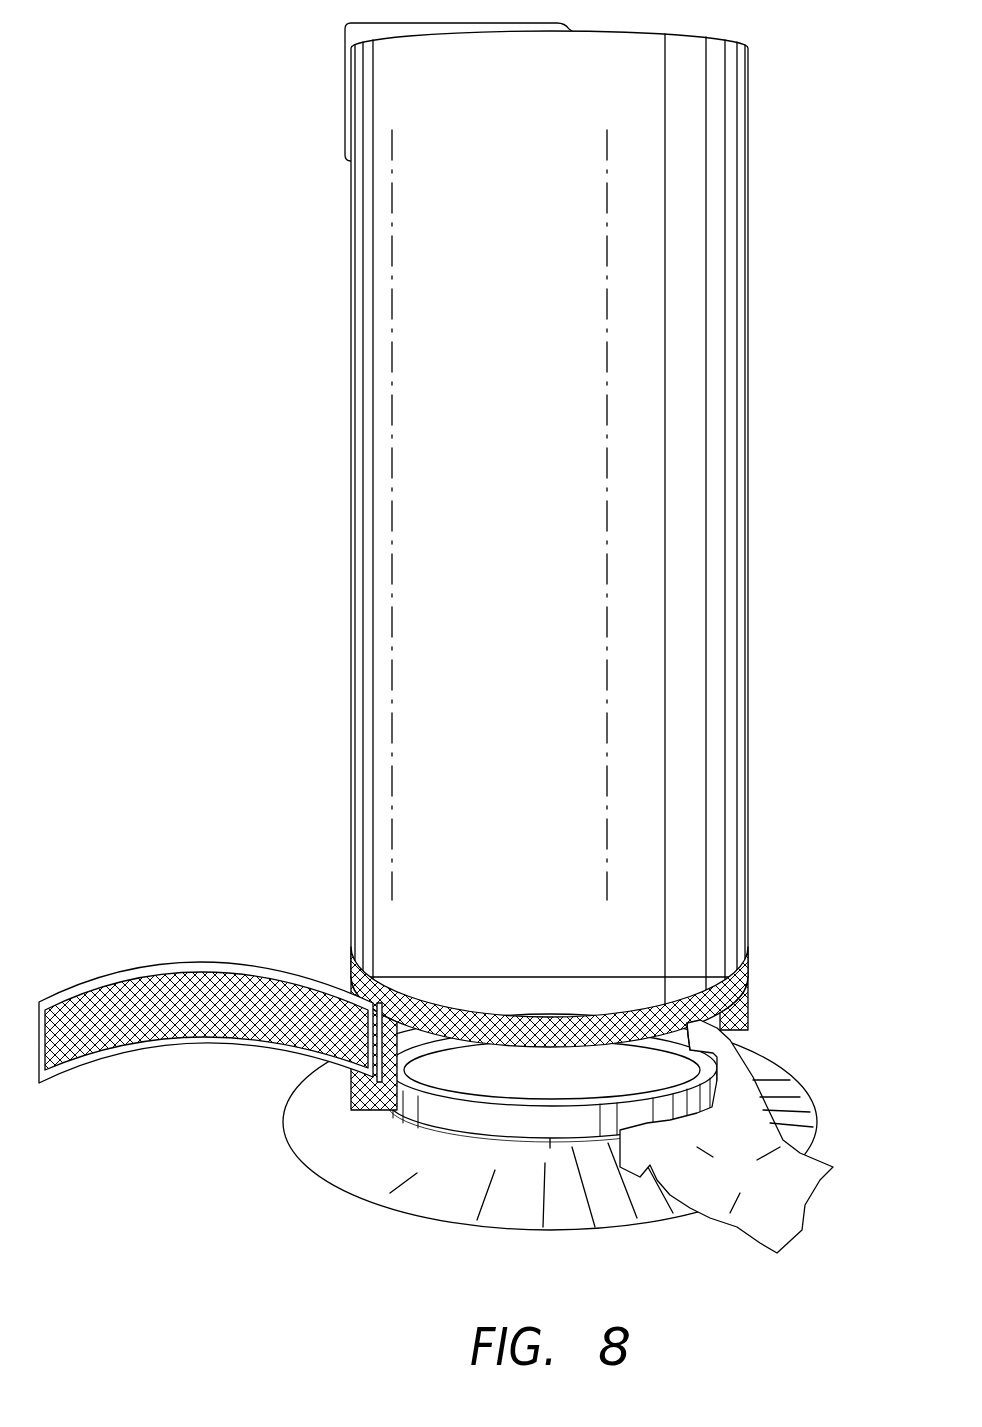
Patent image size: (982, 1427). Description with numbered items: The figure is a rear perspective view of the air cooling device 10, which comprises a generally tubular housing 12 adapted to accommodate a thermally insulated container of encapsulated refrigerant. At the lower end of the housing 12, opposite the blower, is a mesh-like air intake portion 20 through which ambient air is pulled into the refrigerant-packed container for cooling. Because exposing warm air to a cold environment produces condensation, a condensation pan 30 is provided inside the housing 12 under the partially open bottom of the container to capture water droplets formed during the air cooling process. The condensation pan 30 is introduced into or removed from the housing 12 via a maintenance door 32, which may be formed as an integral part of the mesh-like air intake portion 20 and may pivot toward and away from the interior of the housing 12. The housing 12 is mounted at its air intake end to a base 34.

The air cooling device 10 is at (227, 405).
The tubular housing 12 is at (725, 558).
The mesh-like air intake portion 20 is at (733, 1000).
The condensation pan 30 is at (477, 1113).
The maintenance door 32 is at (88, 1000).
The base 34 is at (443, 1192).